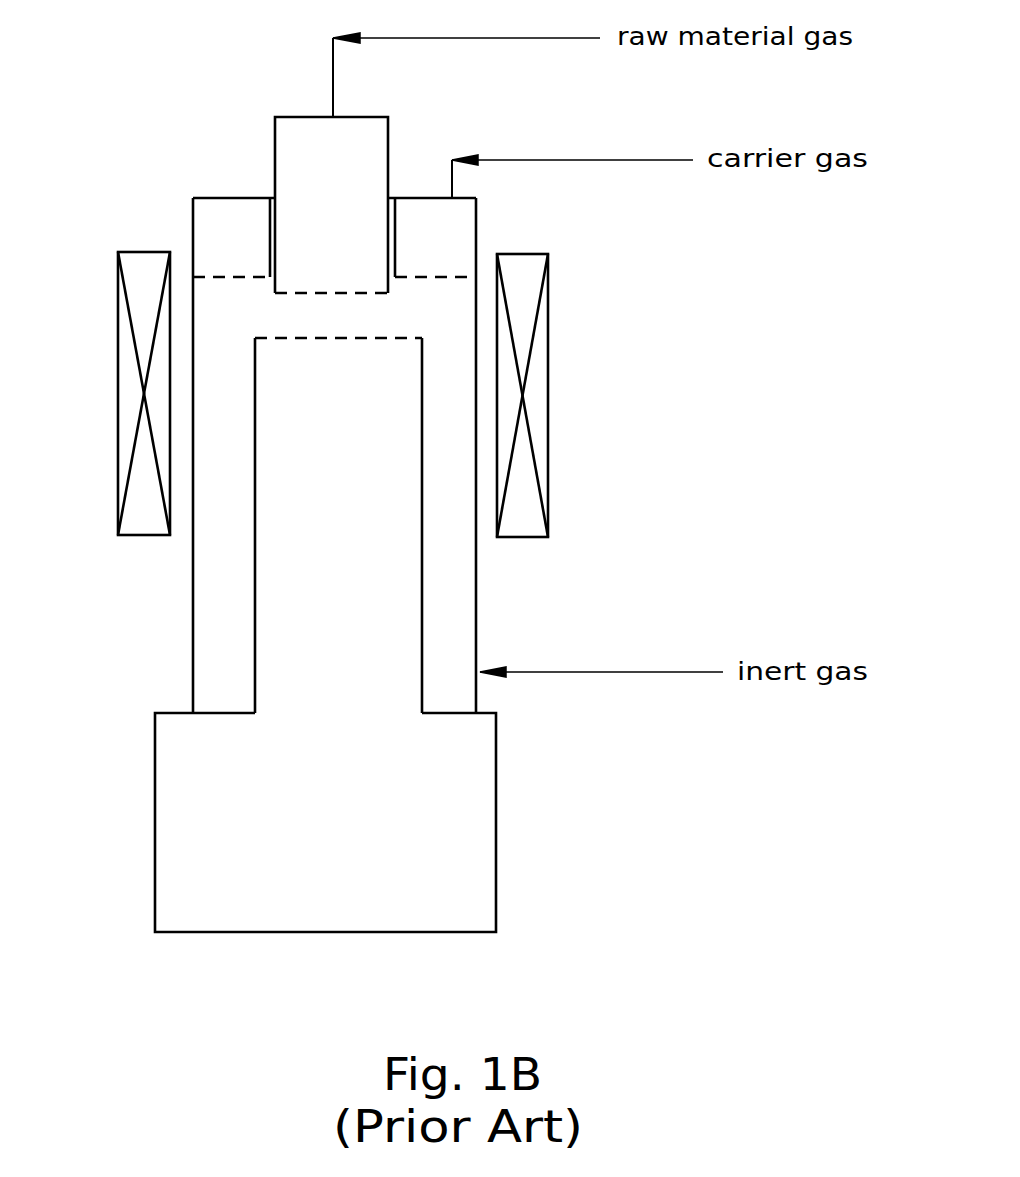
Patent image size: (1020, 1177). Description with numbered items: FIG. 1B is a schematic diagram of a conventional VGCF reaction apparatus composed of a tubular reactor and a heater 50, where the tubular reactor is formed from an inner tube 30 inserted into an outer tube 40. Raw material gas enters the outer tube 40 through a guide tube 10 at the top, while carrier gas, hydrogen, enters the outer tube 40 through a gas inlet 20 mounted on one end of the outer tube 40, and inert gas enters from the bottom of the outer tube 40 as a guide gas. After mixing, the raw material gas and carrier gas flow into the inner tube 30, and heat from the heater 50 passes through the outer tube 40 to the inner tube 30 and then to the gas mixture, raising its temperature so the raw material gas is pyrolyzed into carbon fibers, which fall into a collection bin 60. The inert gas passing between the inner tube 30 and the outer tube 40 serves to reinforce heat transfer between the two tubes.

The guide tube 10 is at (285, 178).
The gas inlet 20 is at (218, 227).
The inner tube 30 is at (422, 572).
The outer tube 40 is at (193, 573).
The heater 50 is at (133, 367).
The collection bin 60 is at (365, 838).